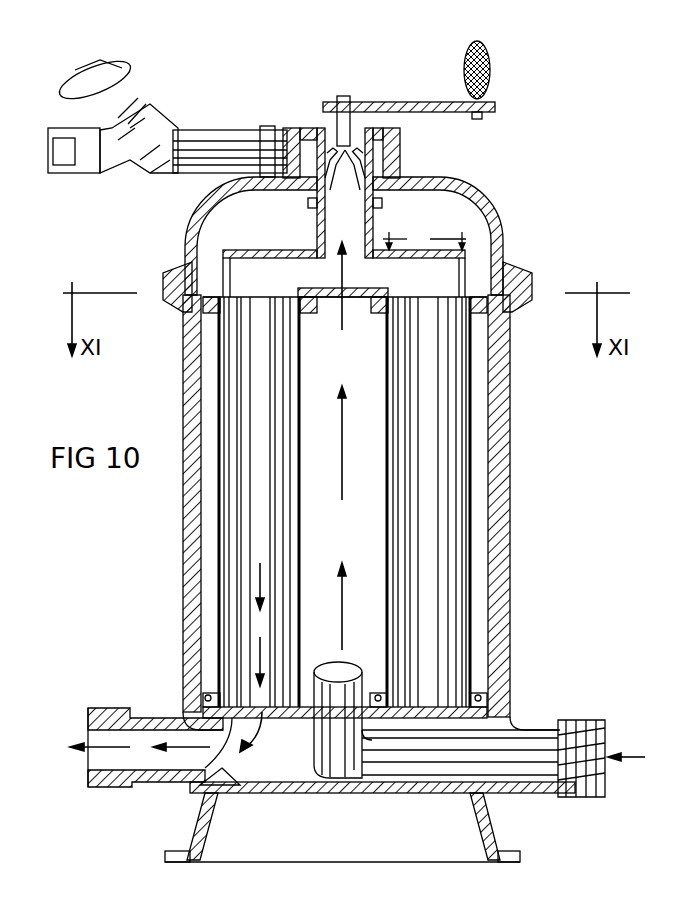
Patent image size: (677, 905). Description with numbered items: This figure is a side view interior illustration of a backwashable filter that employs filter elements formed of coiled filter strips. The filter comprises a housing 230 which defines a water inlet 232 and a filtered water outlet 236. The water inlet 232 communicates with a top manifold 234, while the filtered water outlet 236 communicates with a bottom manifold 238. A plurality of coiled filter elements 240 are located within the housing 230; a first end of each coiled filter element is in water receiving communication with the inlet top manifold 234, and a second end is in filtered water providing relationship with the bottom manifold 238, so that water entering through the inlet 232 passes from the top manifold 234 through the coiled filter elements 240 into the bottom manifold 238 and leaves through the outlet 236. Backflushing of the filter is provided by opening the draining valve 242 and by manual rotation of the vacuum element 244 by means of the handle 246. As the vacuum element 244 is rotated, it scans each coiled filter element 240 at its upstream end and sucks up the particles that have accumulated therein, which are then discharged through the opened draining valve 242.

The housing 230 is at (512, 490).
The water inlet 232 is at (600, 735).
The top manifold 234 is at (440, 293).
The filtered water outlet 236 is at (125, 710).
The bottom manifold 238 is at (205, 780).
The coiled filter elements 240 is at (472, 455).
The draining valve 242 is at (142, 116).
The vacuum element 244 is at (460, 262).
The handle 246 is at (490, 84).